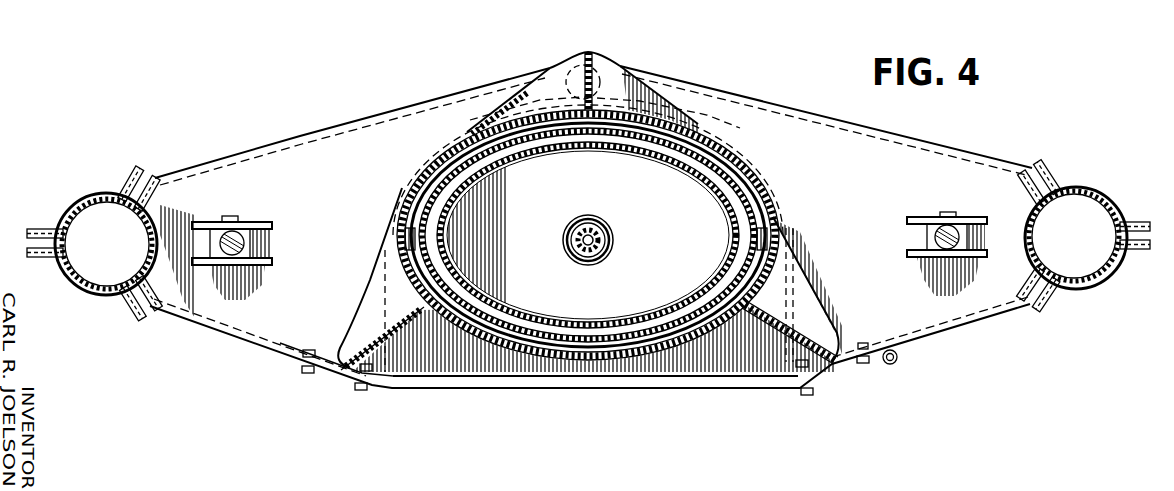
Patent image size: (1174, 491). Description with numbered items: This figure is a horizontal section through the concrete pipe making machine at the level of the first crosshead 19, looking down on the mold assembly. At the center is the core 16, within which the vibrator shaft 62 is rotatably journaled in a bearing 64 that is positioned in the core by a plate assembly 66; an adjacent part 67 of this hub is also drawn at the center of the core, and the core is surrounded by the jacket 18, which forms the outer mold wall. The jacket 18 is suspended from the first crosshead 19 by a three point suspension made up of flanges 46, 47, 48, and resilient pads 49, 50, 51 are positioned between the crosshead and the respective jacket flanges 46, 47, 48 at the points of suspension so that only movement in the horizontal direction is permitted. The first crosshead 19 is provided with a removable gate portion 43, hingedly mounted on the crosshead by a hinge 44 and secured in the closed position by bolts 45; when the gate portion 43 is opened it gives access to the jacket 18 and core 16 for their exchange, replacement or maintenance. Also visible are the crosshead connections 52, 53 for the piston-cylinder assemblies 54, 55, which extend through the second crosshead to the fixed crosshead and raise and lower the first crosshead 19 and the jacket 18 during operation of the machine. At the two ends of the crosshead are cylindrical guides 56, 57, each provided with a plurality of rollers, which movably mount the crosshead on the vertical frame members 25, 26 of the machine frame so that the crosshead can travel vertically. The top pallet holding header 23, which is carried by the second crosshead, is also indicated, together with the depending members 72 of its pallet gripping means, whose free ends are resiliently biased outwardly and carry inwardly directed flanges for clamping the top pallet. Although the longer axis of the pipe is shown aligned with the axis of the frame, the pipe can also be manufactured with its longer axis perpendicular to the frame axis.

The core 16 is at (680, 312).
The jacket 18 is at (700, 352).
The first crosshead 19 is at (349, 137).
The top pallet holding header 23 is at (612, 353).
The vertical member 25 is at (147, 240).
The vertical member 26 is at (1097, 267).
The removable gate portion 43 is at (536, 390).
The hinge 44 is at (893, 365).
The bolts 45 is at (363, 389).
The flange 46 is at (402, 318).
The flange 47 is at (598, 72).
The flange 48 is at (767, 320).
The resilient pad 49 is at (368, 330).
The resilient pad 50 is at (558, 70).
The resilient pad 51 is at (828, 330).
The crosshead connection 52 is at (232, 216).
The crosshead connection 53 is at (949, 213).
The piston-cylinder assembly 54 is at (262, 242).
The piston-cylinder assembly 55 is at (925, 240).
The cylindrical guide 56 is at (80, 200).
The cylindrical guide 57 is at (1103, 200).
The vibrator shaft 62 is at (603, 232).
The bearing 64 is at (578, 220).
The plate assembly 66 is at (680, 249).
The hub shaft 67 is at (587, 258).
The member 72 is at (403, 238).